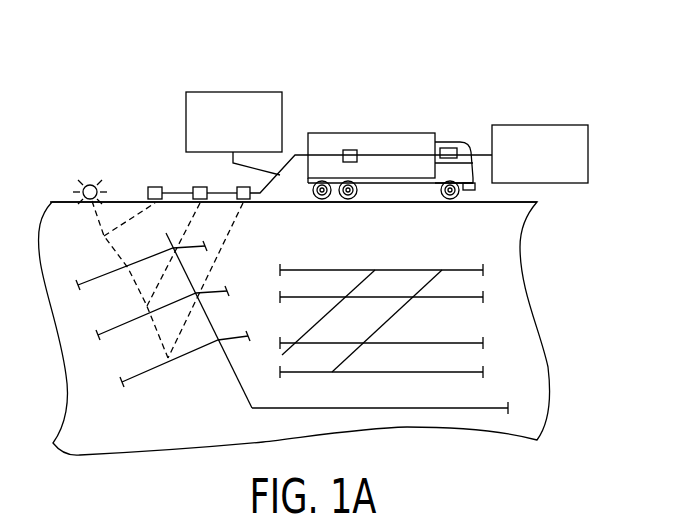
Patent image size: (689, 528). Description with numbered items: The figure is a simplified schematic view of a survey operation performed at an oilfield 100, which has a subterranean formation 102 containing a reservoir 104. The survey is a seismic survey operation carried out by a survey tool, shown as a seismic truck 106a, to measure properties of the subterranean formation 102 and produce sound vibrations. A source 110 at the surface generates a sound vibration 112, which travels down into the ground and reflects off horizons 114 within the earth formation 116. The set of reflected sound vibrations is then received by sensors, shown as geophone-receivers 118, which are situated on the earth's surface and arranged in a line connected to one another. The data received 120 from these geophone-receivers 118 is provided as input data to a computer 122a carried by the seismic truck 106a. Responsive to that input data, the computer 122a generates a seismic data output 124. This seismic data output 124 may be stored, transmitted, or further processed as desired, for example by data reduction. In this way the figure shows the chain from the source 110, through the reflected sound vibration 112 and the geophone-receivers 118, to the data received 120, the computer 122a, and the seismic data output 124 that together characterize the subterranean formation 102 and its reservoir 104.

The oilfield 100 is at (480, 104).
The subterranean formation 102 is at (392, 294).
The reservoir 104 is at (457, 333).
The seismic truck 106a is at (405, 133).
The source 110 is at (92, 184).
The sound vibration 112 is at (104, 237).
The horizons 114 is at (80, 290).
The earth formation 116 is at (238, 380).
The geophone-receivers 118 is at (243, 187).
The data received 120 is at (224, 92).
The computer 122a is at (350, 150).
The seismic data output 124 is at (539, 125).